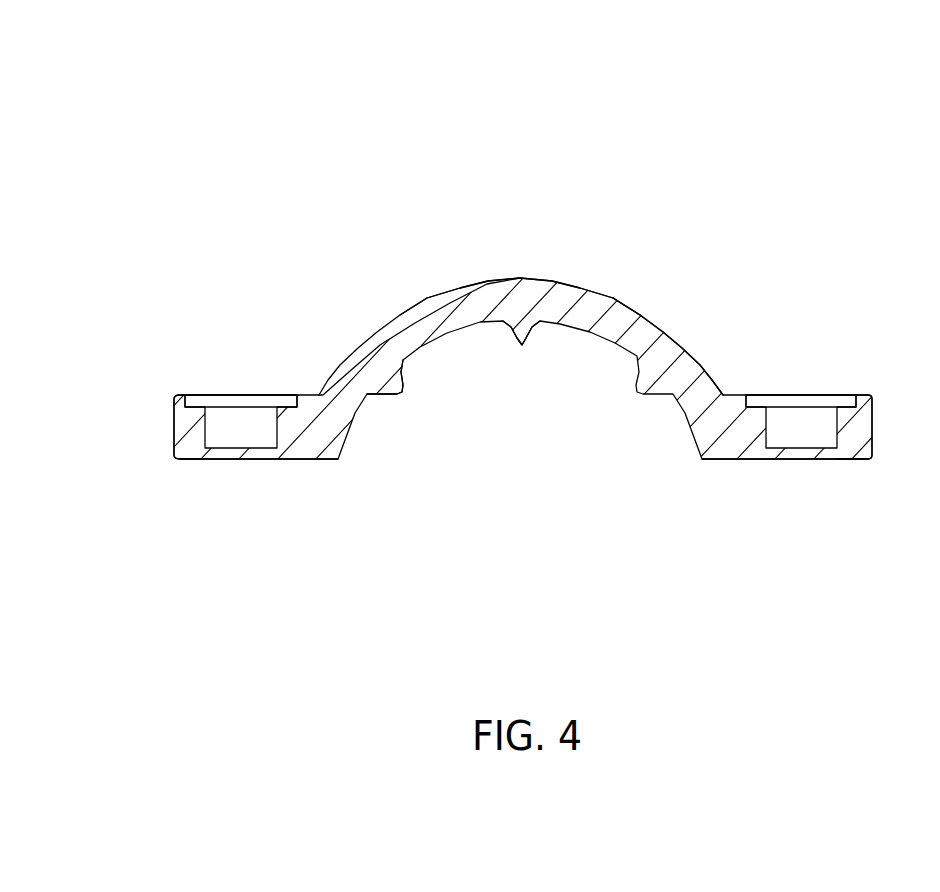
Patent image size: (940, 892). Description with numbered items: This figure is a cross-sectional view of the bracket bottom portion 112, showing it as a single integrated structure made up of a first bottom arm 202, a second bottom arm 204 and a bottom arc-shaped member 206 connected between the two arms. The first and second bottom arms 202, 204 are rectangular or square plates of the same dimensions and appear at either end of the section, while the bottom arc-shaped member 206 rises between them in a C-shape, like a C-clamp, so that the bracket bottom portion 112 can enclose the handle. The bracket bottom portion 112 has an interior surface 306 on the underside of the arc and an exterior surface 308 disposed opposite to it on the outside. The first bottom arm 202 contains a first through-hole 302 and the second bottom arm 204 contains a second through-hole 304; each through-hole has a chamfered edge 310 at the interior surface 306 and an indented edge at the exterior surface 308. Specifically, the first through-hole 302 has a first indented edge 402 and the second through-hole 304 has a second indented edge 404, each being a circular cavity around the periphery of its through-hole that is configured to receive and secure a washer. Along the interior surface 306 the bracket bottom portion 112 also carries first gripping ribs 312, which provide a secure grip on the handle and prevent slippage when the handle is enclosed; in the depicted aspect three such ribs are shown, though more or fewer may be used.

The bracket bottom portion 112 is at (636, 236).
The bottom arc-shaped member 206 is at (528, 297).
The exterior surface 308 is at (678, 338).
The interior surface 306 is at (603, 338).
The first gripping ribs 312 is at (403, 392).
The second through-hole 304 is at (223, 398).
The first through-hole 302 is at (787, 427).
The second indented edge 404 is at (291, 396).
The first indented edge 402 is at (850, 395).
The second bottom arm 204 is at (187, 443).
The first bottom arm 202 is at (862, 445).
The chamfered edge 310 is at (262, 452).